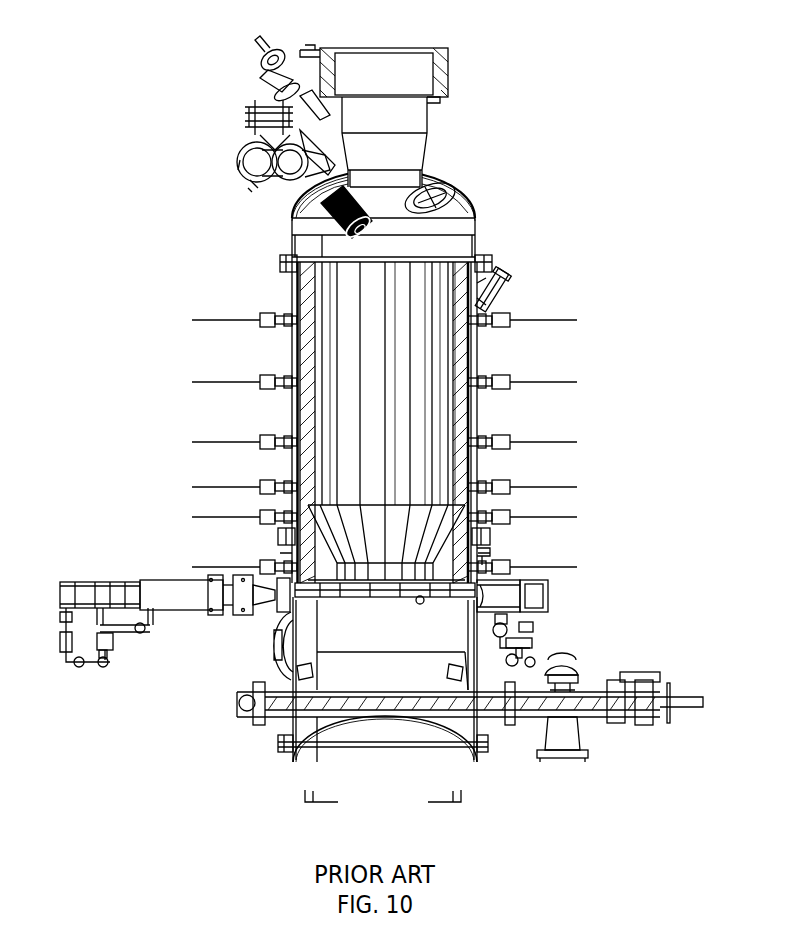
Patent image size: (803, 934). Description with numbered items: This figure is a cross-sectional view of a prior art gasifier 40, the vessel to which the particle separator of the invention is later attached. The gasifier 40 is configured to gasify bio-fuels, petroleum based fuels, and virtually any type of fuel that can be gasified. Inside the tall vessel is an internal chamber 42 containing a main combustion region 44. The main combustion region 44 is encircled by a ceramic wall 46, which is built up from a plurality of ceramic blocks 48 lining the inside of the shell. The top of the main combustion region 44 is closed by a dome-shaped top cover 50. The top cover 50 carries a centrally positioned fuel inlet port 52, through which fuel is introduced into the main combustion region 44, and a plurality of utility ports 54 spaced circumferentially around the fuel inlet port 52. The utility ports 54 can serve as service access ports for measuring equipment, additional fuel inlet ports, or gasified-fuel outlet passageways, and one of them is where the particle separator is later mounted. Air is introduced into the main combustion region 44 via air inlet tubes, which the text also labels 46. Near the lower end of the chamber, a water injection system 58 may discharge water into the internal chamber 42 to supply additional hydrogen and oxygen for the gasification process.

The gasifier 40 is at (150, 57).
The internal chamber 42 is at (386, 420).
The main combustion region 44 is at (453, 456).
The ceramic wall 46 is at (305, 350).
The ceramic blocks 48 is at (440, 577).
The dome-shaped top cover 50 is at (472, 203).
The fuel inlet port 52 is at (390, 66).
The utility ports 54 is at (437, 213).
The water injection system 58 is at (482, 552).